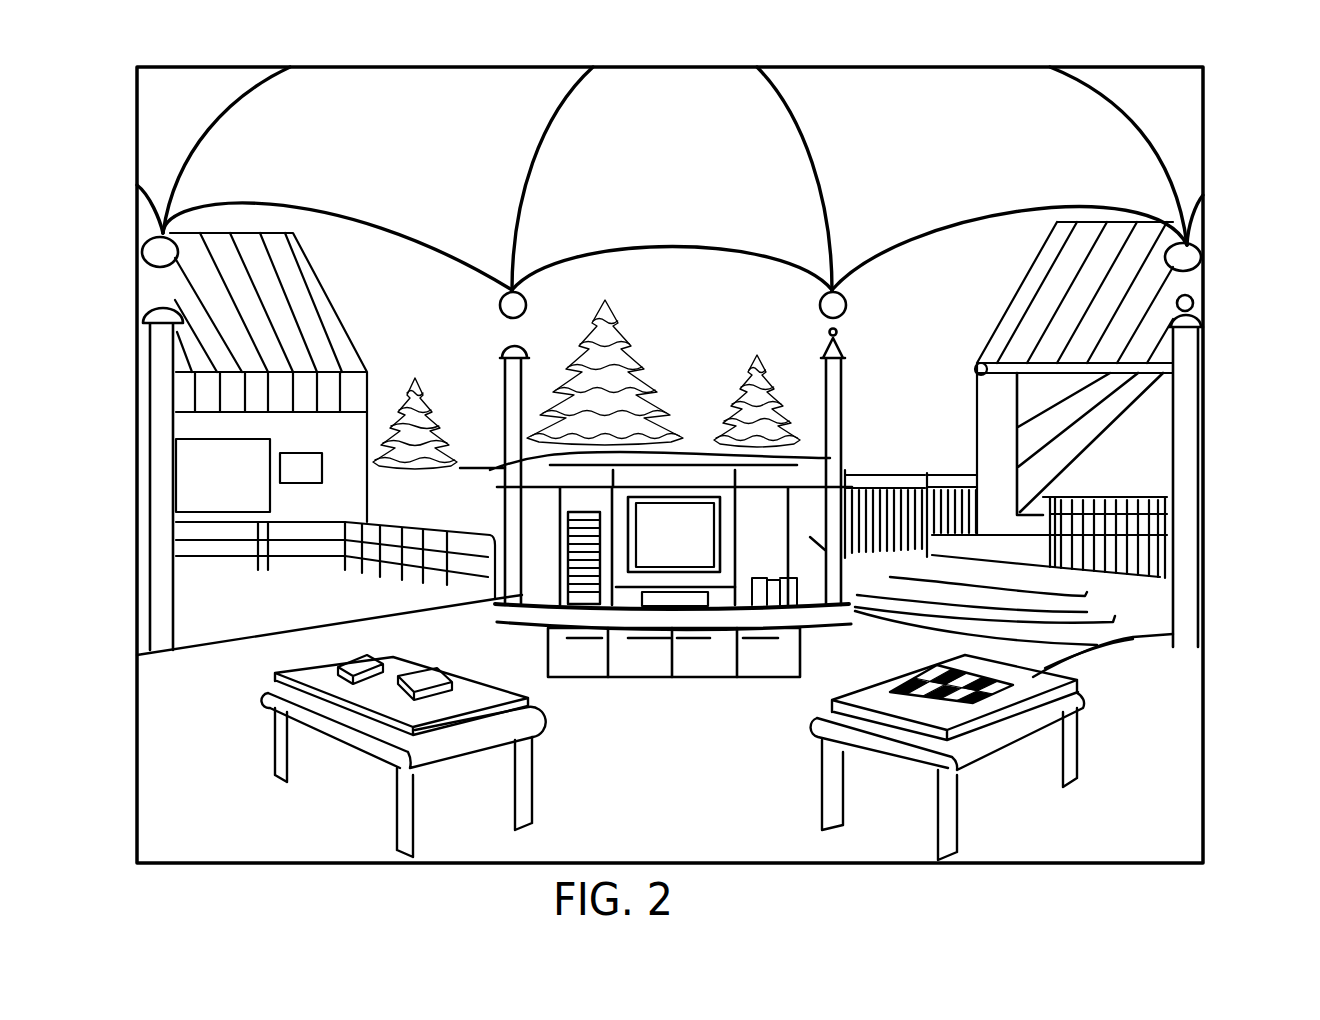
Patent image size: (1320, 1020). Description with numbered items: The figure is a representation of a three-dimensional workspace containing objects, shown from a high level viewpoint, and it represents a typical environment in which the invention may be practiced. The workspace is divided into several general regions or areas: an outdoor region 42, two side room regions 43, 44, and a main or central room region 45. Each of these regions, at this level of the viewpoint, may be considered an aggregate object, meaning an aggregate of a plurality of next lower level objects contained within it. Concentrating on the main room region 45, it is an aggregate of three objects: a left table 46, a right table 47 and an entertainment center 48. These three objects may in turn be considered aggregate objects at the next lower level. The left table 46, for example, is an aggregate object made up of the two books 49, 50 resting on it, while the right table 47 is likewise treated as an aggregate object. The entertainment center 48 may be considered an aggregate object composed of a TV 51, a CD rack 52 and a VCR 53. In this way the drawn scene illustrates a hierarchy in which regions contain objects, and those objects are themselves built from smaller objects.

The outdoor region 42 is at (645, 275).
The side room region 43 is at (228, 622).
The side room region 44 is at (1165, 550).
The main or central room region 45 is at (848, 862).
The left table 46 is at (470, 742).
The right table 47 is at (1125, 640).
The entertainment center 48 is at (590, 513).
The book 49 is at (393, 657).
The book 50 is at (405, 682).
The TV 51 is at (670, 517).
The CD rack 52 is at (778, 580).
The VCR 53 is at (672, 598).